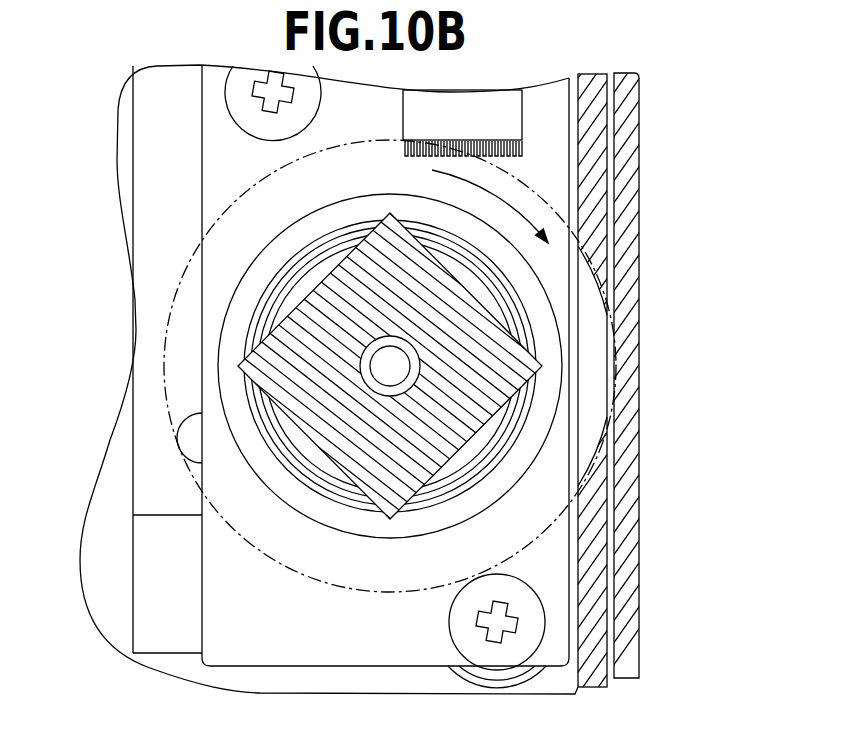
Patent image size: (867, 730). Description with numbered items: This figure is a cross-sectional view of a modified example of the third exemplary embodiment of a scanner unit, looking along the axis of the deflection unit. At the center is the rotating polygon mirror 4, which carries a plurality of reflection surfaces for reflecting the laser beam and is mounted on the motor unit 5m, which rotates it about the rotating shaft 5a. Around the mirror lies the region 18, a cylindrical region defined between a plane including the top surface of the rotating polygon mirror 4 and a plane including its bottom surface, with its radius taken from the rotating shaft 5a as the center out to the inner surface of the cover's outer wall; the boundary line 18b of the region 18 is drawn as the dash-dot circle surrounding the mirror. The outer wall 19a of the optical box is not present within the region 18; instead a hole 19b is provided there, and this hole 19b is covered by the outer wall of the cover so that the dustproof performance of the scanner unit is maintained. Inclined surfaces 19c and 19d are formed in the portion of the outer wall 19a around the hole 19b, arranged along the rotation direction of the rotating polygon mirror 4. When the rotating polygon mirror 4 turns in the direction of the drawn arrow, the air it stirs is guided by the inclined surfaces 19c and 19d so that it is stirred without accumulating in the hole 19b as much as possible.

The rotating polygon mirror 4 is at (315, 326).
The rotating shaft 5a is at (383, 372).
The motor unit 5m is at (302, 458).
The region 18 is at (538, 492).
The boundary line 18b is at (540, 552).
The outer wall 19a is at (593, 97).
The hole 19b is at (593, 362).
The inclined surface 19c is at (590, 257).
The inclined surface 19d is at (590, 473).